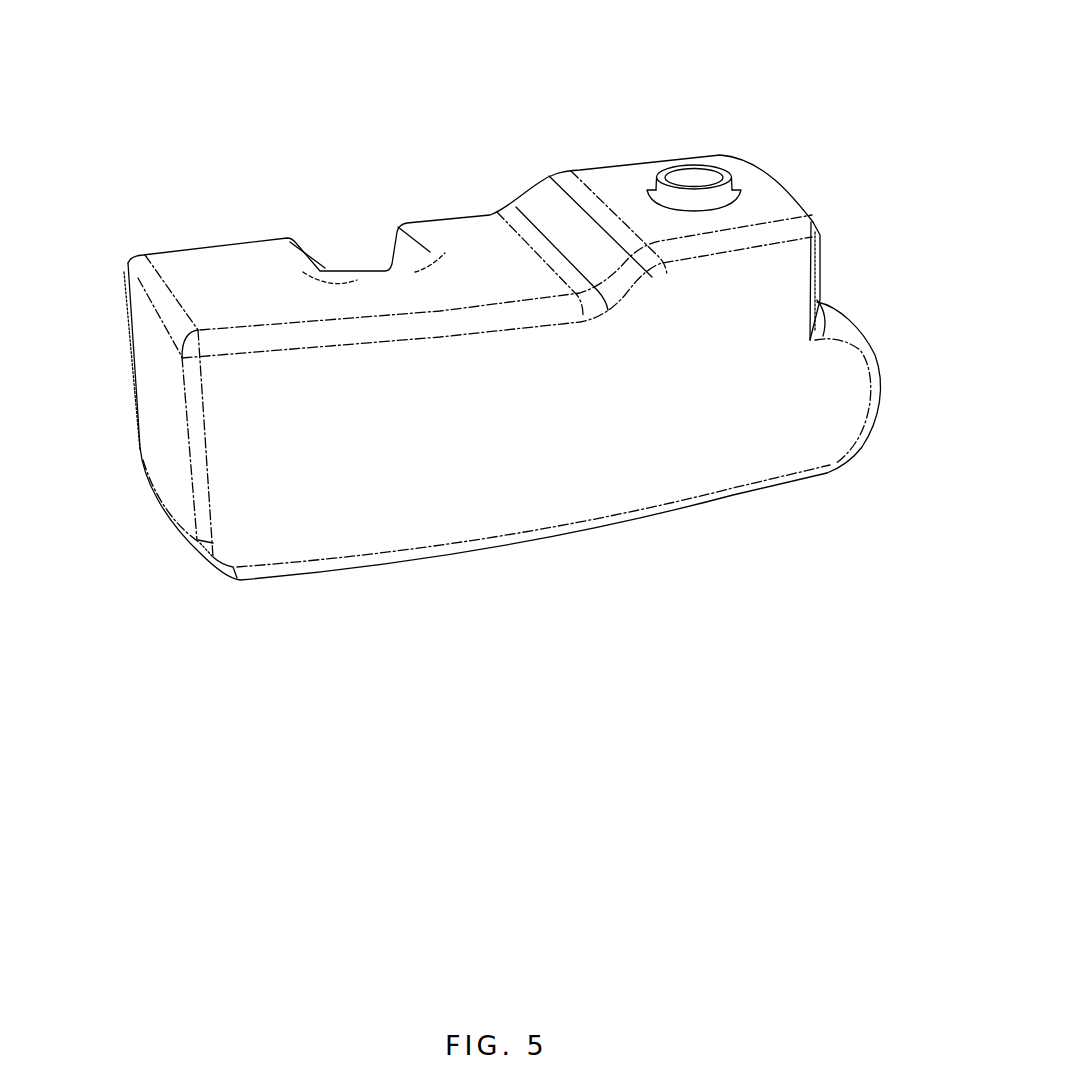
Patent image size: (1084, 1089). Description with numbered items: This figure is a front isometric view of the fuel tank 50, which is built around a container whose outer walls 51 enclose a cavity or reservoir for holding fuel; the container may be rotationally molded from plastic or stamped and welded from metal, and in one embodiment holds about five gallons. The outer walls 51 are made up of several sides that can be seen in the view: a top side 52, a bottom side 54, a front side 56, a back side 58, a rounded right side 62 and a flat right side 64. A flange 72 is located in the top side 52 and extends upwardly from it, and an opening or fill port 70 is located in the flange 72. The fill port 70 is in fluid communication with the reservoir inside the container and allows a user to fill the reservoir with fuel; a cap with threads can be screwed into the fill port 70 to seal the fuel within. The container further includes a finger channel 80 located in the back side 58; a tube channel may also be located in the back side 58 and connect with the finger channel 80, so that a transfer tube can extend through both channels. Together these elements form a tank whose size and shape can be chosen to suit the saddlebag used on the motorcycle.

The fuel tank 50 is at (272, 92).
The outer walls 51 is at (152, 445).
The top side 52 is at (475, 247).
The bottom side 54 is at (468, 552).
The front side 56 is at (287, 537).
The back side 58 is at (128, 327).
The rounded right side 62 is at (873, 353).
The flat right side 64 is at (820, 263).
The fill port 70 is at (693, 180).
The flange 72 is at (725, 197).
The finger channel 80 is at (347, 262).